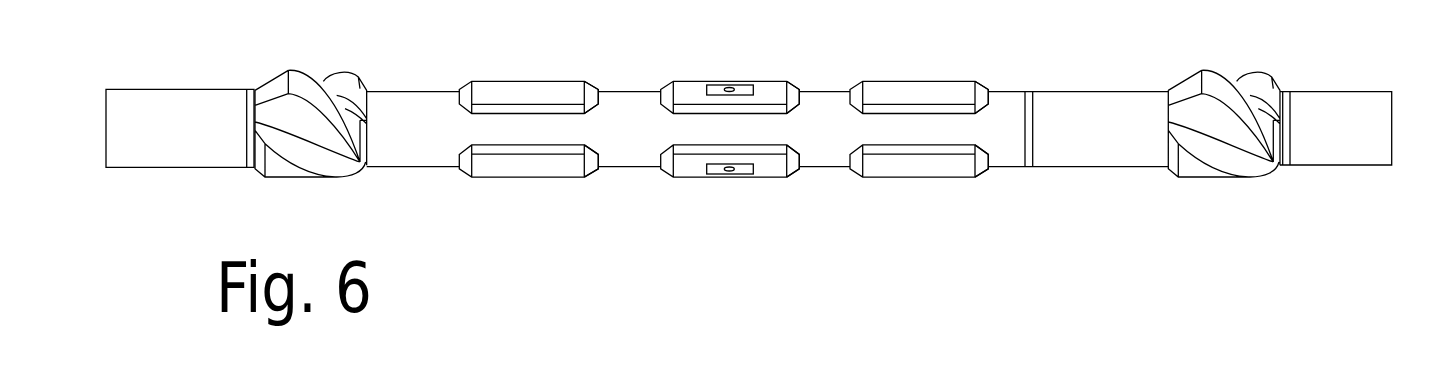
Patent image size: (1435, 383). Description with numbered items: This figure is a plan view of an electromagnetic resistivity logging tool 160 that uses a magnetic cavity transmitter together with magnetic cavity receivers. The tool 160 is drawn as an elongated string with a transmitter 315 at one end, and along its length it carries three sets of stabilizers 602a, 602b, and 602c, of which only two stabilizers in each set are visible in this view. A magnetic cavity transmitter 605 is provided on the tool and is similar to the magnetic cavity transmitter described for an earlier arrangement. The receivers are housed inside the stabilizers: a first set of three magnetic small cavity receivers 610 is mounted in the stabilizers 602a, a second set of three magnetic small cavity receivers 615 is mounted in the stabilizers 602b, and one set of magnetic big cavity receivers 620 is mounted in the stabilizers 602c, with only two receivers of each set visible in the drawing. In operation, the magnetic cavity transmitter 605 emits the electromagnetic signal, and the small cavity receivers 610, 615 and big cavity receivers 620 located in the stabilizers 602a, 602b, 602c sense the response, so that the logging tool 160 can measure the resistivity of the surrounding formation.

The electromagnetic resistivity logging tool 160 is at (182, 197).
The transmitter 315 is at (197, 89).
The magnetic small cavity receivers 615 is at (528, 87).
The stabilizers 602b is at (587, 86).
The magnetic big cavity receivers 620 is at (729, 88).
The stabilizers 602c is at (792, 85).
The magnetic small cavity receivers 610 is at (918, 87).
The stabilizers 602a is at (980, 85).
The magnetic cavity transmitter 605 is at (1035, 110).